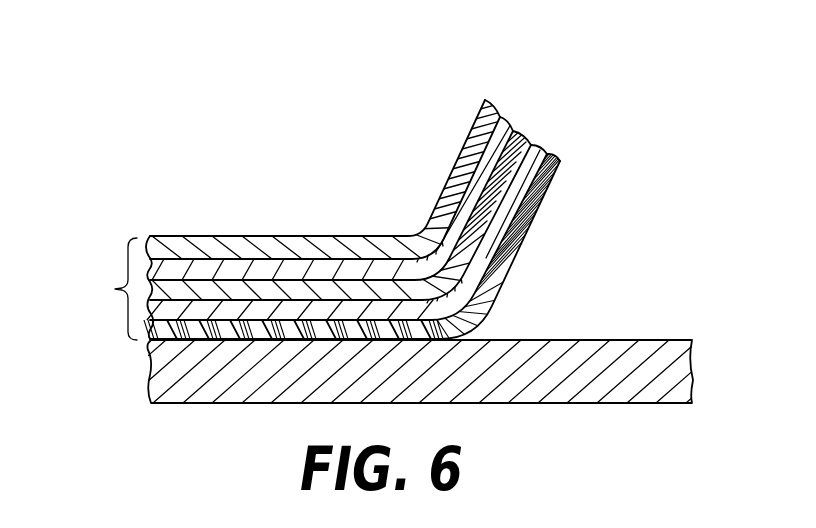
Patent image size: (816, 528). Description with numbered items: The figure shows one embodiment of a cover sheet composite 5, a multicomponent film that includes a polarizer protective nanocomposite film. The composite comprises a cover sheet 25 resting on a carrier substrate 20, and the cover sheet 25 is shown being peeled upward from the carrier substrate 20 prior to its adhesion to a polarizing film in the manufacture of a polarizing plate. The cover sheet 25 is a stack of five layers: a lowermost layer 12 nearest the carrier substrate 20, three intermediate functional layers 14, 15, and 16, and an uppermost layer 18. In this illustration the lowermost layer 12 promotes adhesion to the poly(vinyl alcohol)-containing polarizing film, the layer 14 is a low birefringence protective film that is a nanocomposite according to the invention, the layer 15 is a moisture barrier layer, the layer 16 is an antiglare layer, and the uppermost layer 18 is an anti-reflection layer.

The cover sheet composite 5 is at (337, 147).
The lowermost layer 12 is at (554, 155).
The low birefringence protective film 14 is at (541, 149).
The moisture barrier layer 15 is at (526, 140).
The antiglare layer 16 is at (510, 117).
The anti-reflection layer 18 is at (494, 100).
The carrier substrate 20 is at (633, 340).
The cover sheet 25 is at (111, 288).